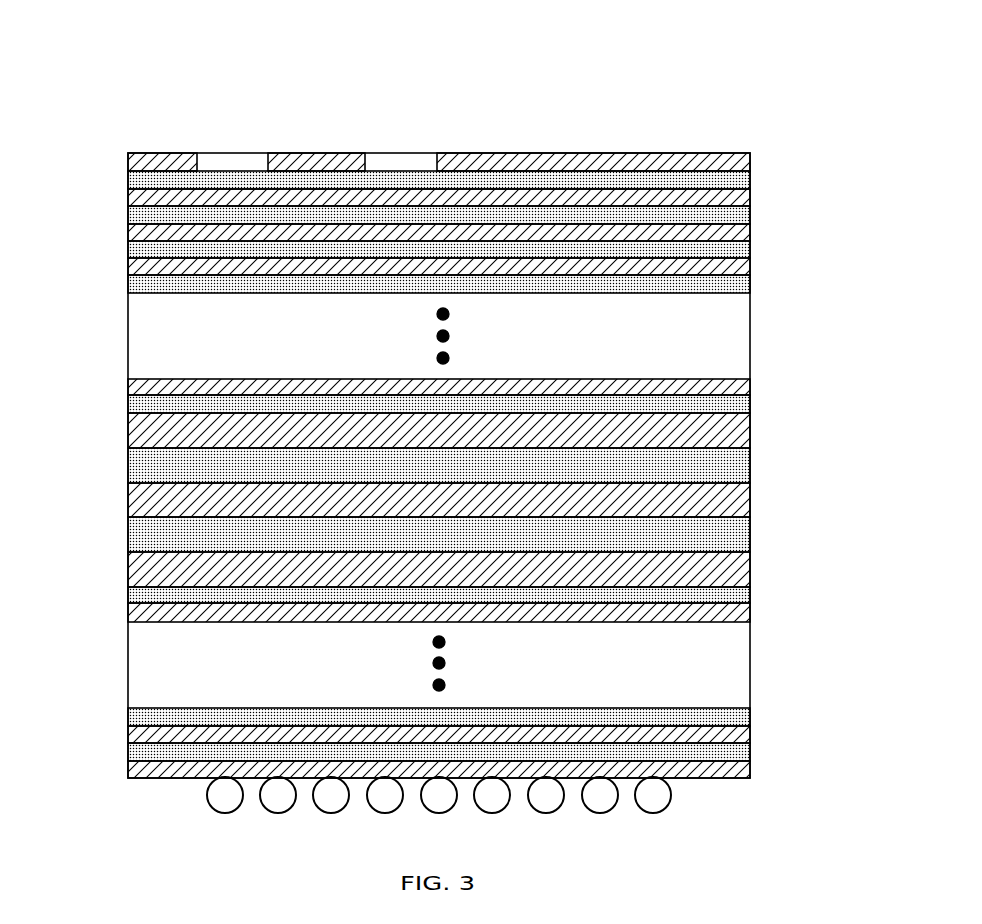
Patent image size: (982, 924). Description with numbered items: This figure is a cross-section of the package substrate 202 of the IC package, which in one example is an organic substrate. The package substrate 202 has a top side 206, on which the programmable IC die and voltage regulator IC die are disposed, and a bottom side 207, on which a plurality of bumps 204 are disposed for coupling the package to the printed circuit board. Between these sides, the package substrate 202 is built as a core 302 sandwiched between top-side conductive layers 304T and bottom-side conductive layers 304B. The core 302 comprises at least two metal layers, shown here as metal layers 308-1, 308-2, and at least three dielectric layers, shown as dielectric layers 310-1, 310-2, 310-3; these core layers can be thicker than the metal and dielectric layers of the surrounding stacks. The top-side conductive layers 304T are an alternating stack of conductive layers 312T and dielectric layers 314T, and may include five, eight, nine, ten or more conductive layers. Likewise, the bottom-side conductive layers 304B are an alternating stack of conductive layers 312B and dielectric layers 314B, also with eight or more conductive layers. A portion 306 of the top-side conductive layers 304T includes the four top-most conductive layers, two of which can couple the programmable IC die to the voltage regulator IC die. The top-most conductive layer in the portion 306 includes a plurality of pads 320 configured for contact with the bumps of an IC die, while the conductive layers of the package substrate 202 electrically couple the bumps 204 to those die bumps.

The package substrate 202 is at (160, 68).
The bumps 204 is at (662, 800).
The top side 206 is at (690, 153).
The bottom side 207 is at (740, 778).
The core 302 is at (436, 500).
The top-side conductive layers 304T is at (453, 255).
The bottom-side conductive layers 304B is at (435, 702).
The portion of the top-side conductive layers 306 is at (762, 293).
The metal layer 308-1 is at (742, 465).
The metal layer 308-2 is at (742, 533).
The dielectric layer 310-1 is at (742, 500).
The dielectric layer 310-2 is at (742, 430).
The dielectric layer 310-3 is at (735, 565).
The conductive layers 312T is at (748, 405).
The conductive layers 312B is at (745, 595).
The dielectric layers 314T is at (745, 388).
The dielectric layers 314B is at (744, 613).
The pads 320 is at (230, 170).